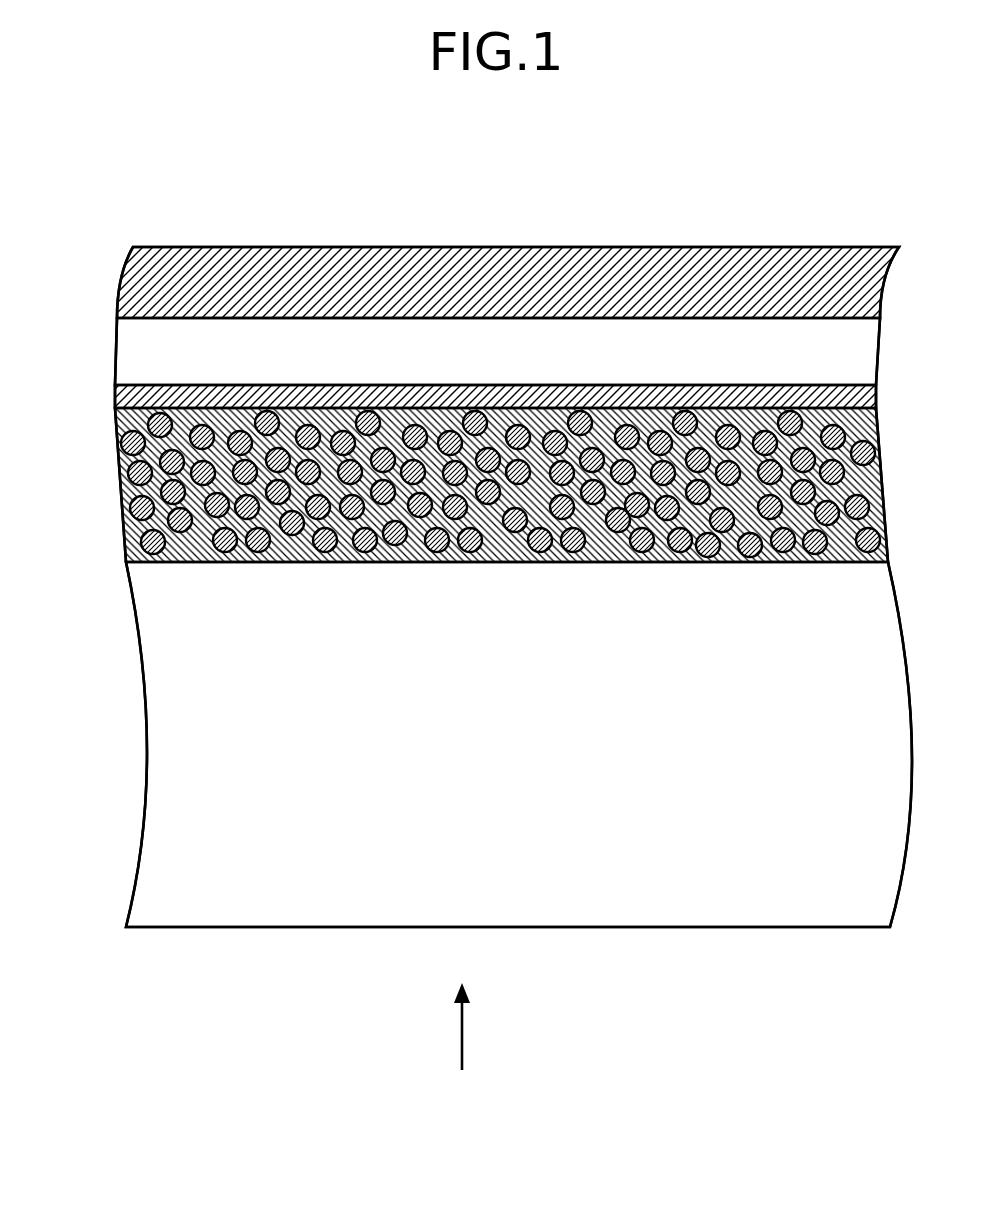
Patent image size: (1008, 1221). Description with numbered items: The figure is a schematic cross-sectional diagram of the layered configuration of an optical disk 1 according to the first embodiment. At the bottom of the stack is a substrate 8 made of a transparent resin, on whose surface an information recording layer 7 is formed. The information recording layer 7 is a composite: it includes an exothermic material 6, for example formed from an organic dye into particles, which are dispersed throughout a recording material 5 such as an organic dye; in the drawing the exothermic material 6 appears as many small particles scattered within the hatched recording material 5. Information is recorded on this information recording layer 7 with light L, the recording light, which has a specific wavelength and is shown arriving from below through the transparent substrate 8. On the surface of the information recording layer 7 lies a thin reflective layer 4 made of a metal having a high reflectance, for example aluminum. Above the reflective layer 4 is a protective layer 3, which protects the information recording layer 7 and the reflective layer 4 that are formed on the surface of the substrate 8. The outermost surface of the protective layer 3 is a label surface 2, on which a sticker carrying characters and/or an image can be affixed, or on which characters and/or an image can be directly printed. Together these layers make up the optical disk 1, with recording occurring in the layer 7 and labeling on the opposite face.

The optical disk 1 is at (131, 222).
The label surface 2 is at (241, 262).
The protective layer 3 is at (130, 348).
The reflective layer 4 is at (125, 398).
The recording material 5 is at (122, 421).
The exothermic material 6 is at (40, 408).
The information recording layer 7 is at (444, 485).
The substrate 8 is at (160, 683).
The light (recording light) L is at (462, 1046).